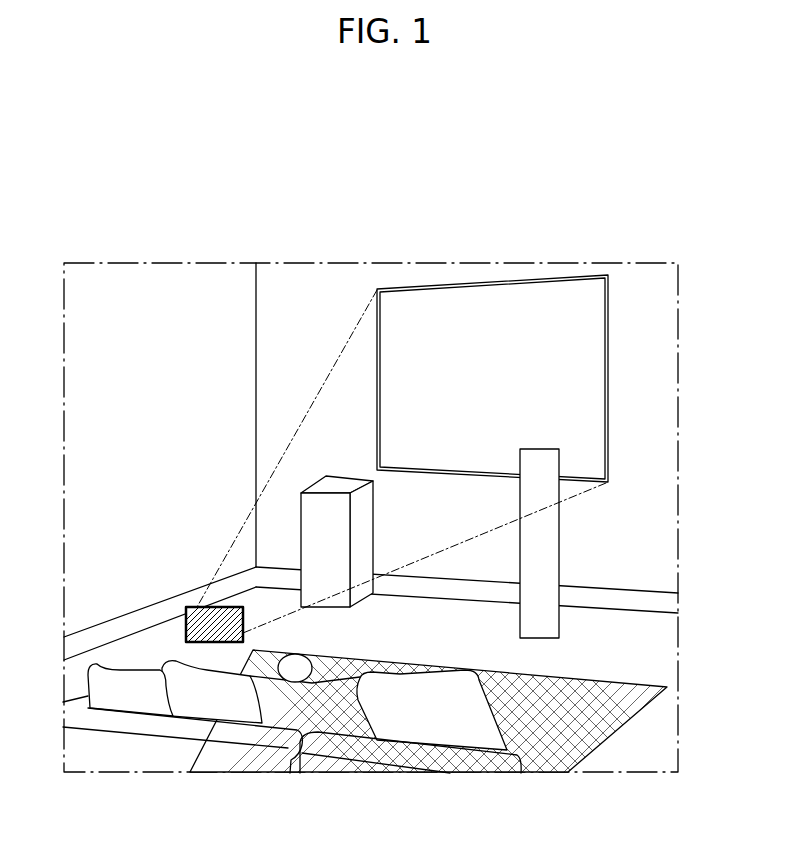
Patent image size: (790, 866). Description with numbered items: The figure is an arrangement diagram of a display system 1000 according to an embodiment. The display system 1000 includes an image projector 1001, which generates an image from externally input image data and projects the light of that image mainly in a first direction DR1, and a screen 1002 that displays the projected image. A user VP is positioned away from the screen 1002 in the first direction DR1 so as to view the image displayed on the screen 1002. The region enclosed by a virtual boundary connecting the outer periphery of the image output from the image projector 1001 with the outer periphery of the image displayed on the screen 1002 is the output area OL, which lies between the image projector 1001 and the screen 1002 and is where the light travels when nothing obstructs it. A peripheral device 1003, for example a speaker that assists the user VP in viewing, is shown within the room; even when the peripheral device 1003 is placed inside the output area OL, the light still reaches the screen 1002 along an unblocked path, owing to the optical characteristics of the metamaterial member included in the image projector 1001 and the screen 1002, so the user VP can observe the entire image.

The display system 1000 is at (154, 218).
The image projector 1001 is at (186, 622).
The screen 1002 is at (560, 295).
The peripheral device 1003 is at (559, 520).
The output area OL is at (338, 360).
The user VP is at (290, 686).
The first direction DR1 is at (580, 698).